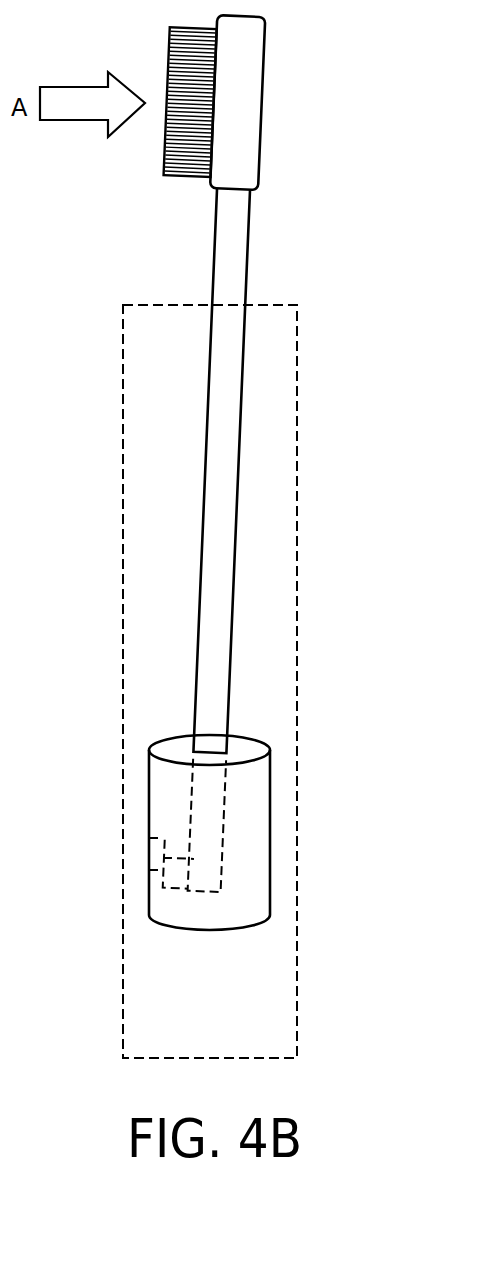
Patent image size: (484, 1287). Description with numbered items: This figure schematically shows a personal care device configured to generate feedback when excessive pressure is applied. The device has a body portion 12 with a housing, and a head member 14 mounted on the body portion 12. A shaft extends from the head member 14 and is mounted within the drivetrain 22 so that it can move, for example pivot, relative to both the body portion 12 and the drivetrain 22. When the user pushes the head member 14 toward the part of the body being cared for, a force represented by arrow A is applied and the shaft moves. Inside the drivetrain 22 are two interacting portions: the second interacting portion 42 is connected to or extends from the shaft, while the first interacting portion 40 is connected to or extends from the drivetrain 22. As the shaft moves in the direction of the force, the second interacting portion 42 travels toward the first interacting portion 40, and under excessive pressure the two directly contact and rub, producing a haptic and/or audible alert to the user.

The body portion 12 is at (297, 590).
The head member 14 is at (262, 140).
The drivetrain 22 is at (270, 830).
The first interacting portion 40 is at (180, 880).
The second interacting portion 42 is at (152, 852).